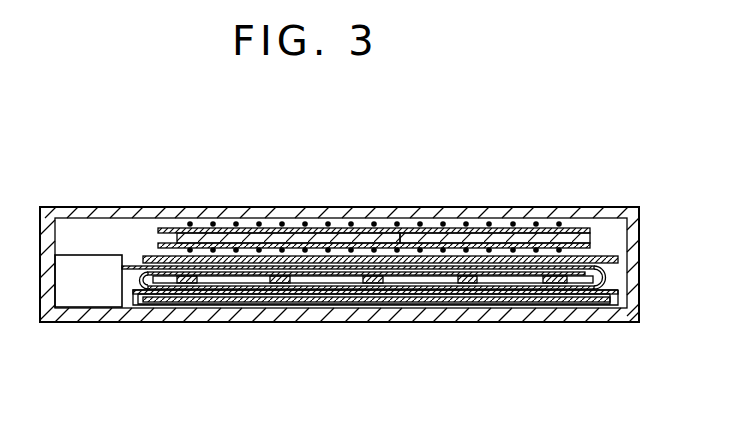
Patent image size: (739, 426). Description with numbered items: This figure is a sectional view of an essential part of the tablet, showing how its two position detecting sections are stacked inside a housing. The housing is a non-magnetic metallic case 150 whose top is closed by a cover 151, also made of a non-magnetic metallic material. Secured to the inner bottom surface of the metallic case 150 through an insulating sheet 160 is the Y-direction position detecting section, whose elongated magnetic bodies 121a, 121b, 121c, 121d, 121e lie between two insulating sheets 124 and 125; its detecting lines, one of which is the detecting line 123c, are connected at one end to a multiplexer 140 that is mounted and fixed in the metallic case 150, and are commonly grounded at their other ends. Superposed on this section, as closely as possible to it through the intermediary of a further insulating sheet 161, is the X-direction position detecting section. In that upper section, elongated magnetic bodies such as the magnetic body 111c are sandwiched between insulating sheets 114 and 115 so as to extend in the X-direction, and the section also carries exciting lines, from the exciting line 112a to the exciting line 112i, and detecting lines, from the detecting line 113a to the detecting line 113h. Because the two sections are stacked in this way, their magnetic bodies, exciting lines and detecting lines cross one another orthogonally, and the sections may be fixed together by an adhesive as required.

The multiplexer 140 is at (90, 255).
The insulating sheet 114 is at (163, 228).
The exciting line 112a is at (193, 226).
The detecting line 113a is at (226, 243).
The insulating sheet 115 is at (341, 240).
The magnetic body 111c is at (433, 238).
The detecting line 113h is at (535, 225).
The exciting line 112i is at (563, 218).
The cover 151 is at (612, 215).
The insulating sheet 161 is at (620, 259).
The detecting line 123c is at (610, 282).
The magnetic body 121a is at (557, 268).
The magnetic body 121b is at (466, 282).
The magnetic body 121c is at (381, 284).
The magnetic body 121d is at (279, 284).
The magnetic body 121e is at (185, 283).
The insulating sheet 124 is at (318, 280).
The insulating sheet 125 is at (229, 292).
The insulating sheet 160 is at (352, 300).
The non-magnetic metallic case 150 is at (590, 311).